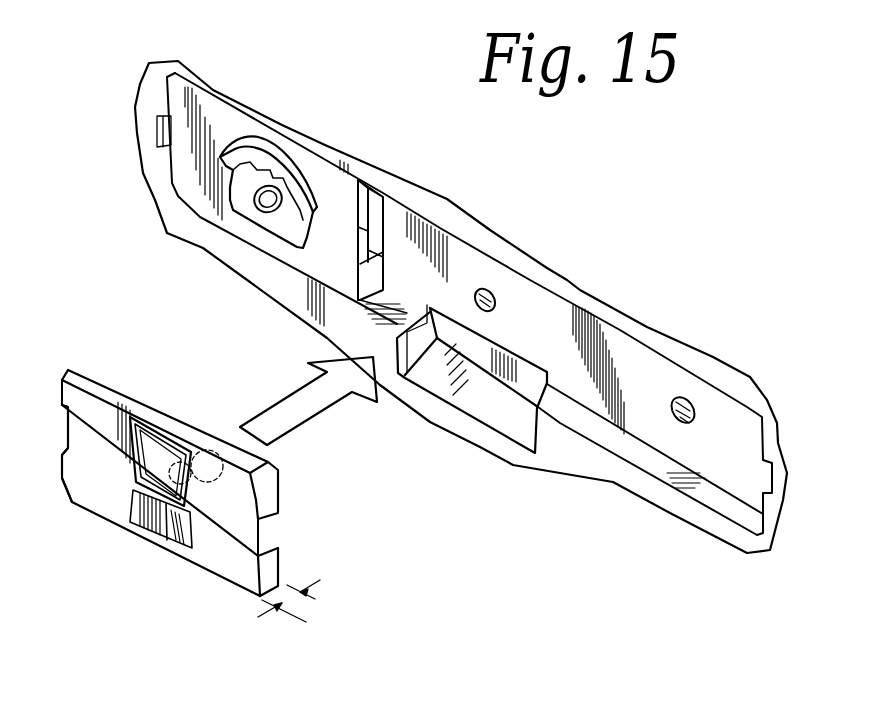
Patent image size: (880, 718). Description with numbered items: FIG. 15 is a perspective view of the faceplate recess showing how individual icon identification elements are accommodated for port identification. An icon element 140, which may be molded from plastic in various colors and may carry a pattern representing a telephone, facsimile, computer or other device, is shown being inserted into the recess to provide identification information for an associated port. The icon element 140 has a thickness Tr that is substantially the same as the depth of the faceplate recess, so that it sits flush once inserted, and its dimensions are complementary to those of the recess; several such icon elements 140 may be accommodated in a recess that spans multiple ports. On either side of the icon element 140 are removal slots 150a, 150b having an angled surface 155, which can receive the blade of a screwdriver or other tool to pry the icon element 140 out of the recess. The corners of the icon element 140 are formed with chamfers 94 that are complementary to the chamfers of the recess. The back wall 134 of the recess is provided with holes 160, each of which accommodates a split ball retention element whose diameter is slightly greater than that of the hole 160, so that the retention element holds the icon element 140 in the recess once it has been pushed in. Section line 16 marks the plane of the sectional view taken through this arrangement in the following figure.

The back wall 134 is at (647, 365).
The icon element 140 is at (273, 148).
The angled surface 155 is at (370, 248).
The hole 160 is at (683, 396).
The chamfer 94 is at (272, 474).
The removal slot 150a is at (52, 430).
The removal slot 150b is at (288, 525).
The section line for FIG. 16 is at (420, 275).
The thickness of the icon element Tr is at (298, 612).